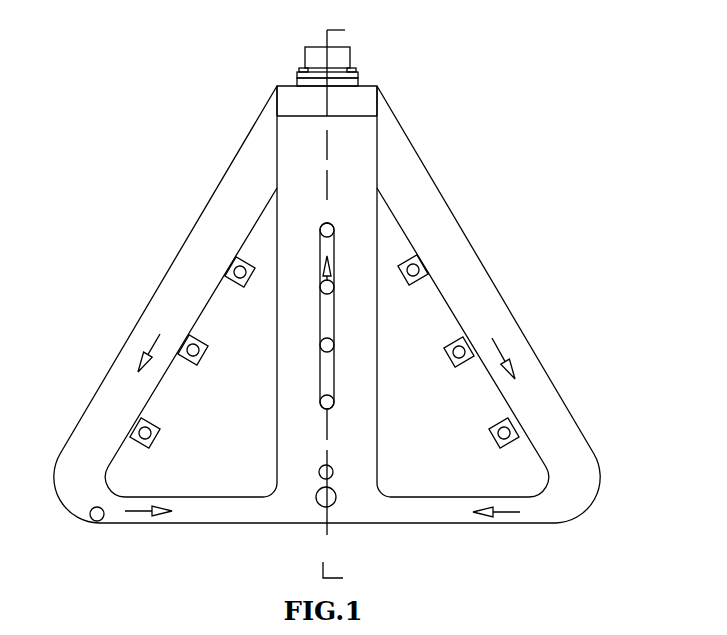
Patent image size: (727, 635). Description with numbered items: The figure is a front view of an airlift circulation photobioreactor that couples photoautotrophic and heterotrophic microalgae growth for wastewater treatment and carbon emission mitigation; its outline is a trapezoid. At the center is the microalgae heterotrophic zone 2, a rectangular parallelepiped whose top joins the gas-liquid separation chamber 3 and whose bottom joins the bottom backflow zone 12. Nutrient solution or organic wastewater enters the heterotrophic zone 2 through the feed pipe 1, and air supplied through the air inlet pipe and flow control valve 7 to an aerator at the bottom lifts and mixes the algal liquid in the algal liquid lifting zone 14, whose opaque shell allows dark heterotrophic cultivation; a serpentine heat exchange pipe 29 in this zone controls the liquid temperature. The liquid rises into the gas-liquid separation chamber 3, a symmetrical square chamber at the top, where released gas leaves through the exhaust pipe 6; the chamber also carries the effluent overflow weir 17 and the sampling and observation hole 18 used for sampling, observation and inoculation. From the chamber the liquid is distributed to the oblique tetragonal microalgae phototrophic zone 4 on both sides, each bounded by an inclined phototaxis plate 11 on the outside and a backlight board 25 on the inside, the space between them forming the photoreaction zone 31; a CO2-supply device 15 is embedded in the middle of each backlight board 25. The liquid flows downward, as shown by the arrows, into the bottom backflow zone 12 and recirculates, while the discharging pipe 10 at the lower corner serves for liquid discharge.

The feed pipe 1 is at (333, 469).
The microalgae heterotrophic zone 2 is at (377, 398).
The gas-liquid separation chamber 3 is at (365, 100).
The microalgae phototrophic zone 4 is at (438, 227).
The exhaust pipe 6 is at (320, 65).
The air inlet pipe and flow control valve 7 is at (331, 501).
The discharging pipe 10 is at (102, 518).
The phototaxis plate 11 is at (193, 237).
The bottom backflow zone 12 is at (200, 506).
The algal liquid lifting zone 14 is at (290, 332).
The CO2-supply device 15 is at (142, 418).
The effluent overflow weir 17 is at (327, 115).
The sampling and observation hole 18 is at (322, 81).
The backlight board 25 is at (503, 398).
The serpentine heat exchange pipe 29 is at (333, 398).
The photoreaction zone 31 is at (238, 210).